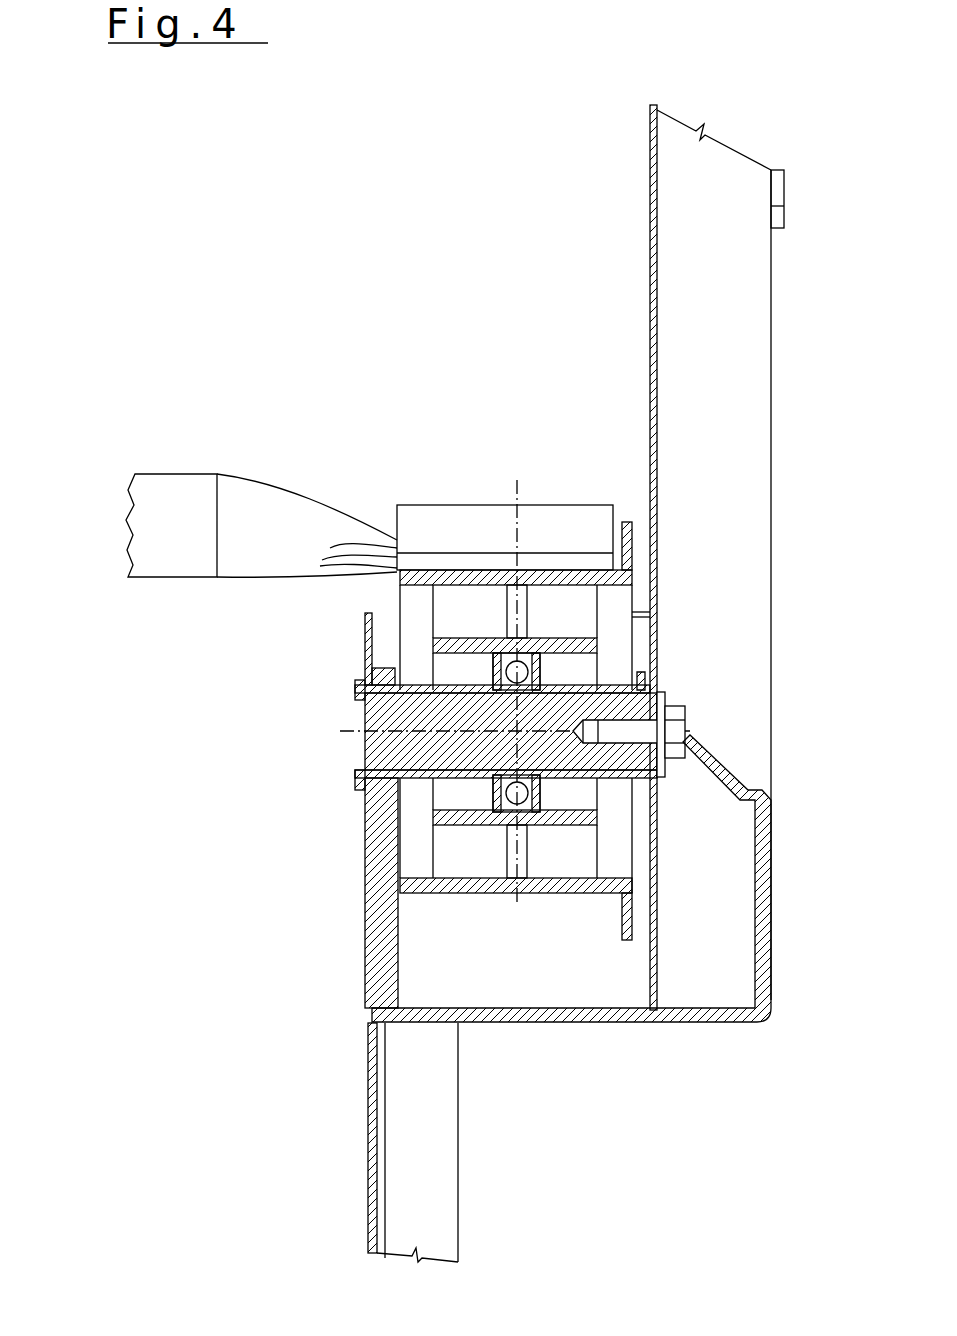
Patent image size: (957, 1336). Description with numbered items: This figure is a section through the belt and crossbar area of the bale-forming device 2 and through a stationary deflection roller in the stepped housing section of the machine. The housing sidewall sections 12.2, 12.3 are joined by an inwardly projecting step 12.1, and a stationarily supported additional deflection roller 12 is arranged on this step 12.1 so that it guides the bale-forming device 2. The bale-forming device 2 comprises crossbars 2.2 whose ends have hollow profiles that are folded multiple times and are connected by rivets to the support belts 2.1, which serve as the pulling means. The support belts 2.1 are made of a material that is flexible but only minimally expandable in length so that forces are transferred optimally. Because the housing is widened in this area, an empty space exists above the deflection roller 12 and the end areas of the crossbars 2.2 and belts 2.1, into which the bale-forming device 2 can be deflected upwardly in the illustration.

The bale-forming device 2 is at (372, 445).
The support belt 2.1 is at (437, 522).
The crossbar 2.2 is at (170, 498).
The deflection roller 12 is at (420, 617).
The step 12.1 is at (287, 863).
The sidewall section 12.2 is at (650, 305).
The sidewall section 12.3 is at (372, 990).